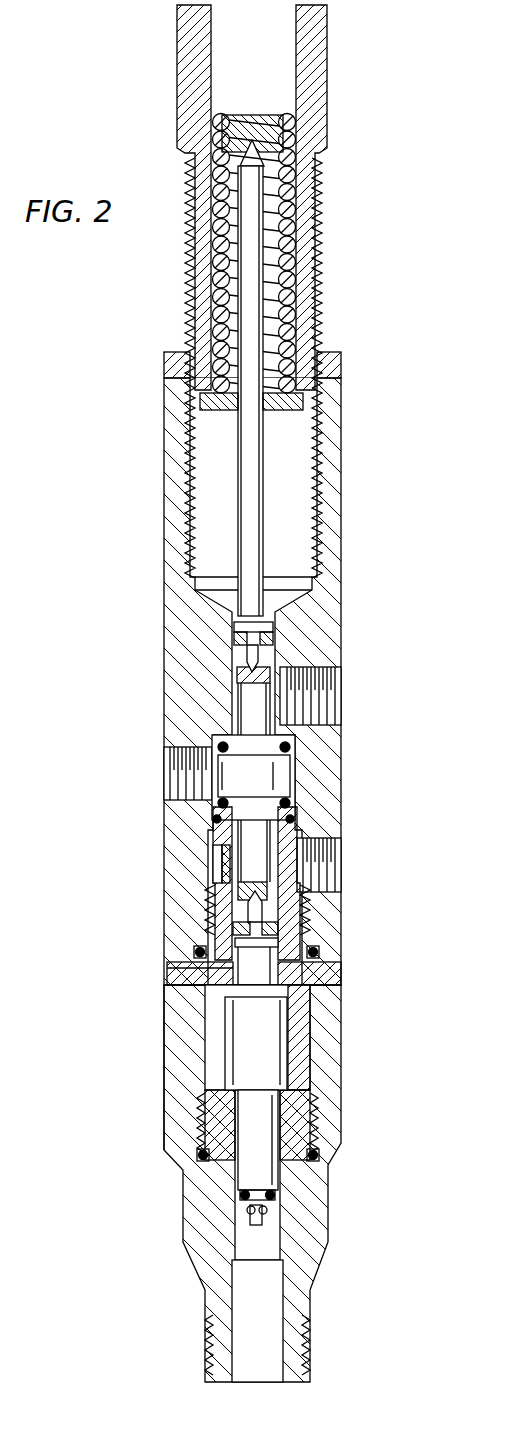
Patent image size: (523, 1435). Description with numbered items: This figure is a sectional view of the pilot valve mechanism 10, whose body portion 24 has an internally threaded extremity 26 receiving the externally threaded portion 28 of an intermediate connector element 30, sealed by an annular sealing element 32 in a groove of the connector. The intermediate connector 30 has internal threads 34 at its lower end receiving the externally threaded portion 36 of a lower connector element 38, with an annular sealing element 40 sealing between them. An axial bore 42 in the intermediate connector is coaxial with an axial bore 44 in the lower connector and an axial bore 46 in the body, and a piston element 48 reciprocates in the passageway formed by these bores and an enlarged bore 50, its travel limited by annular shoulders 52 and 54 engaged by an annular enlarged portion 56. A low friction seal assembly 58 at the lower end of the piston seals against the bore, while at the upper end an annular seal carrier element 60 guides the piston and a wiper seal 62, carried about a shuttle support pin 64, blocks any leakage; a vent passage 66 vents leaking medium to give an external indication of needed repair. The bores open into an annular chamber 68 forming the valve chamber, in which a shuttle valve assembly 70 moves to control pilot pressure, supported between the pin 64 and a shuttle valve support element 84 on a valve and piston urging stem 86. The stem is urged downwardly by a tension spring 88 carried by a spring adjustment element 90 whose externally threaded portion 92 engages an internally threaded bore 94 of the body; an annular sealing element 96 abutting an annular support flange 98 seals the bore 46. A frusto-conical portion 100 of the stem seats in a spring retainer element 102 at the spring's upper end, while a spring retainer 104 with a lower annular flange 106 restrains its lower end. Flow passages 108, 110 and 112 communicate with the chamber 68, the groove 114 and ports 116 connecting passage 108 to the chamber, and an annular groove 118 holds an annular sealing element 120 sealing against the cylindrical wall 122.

The valve assembly 10 is at (160, 1068).
The body portion 24 is at (343, 562).
The internally threaded extremity 26 is at (195, 950).
The externally threaded portion 28 is at (222, 905).
The intermediate connector element 30 is at (180, 1023).
The annular sealing element 32 is at (190, 975).
The internal threads 34 is at (200, 1115).
The externally threaded portion 36 is at (200, 1150).
The lower connector element 38 is at (197, 1250).
The annular sealing element 40 is at (216, 1160).
The axial bore 42 is at (306, 905).
The axial bore 44 is at (276, 1178).
The axial bore 46 is at (275, 665).
The piston element 48 is at (292, 1035).
The enlarged bore 50 is at (305, 1075).
The annular shoulder 52 is at (305, 1005).
The annular shoulder 54 is at (290, 1100).
The annular enlarged portion 56 is at (236, 1075).
The seal assembly 58 is at (245, 1200).
The annular seal carrier element 60 is at (256, 952).
The wiper seal 62 is at (265, 928).
The shuttle support pin 64 is at (280, 945).
The vent passage 66 is at (228, 987).
The annular bore or chamber 68 is at (300, 782).
The shuttle valve assembly 70 is at (297, 790).
The shuttle valve support element 84 is at (250, 655).
The valve and piston urging stem 86 is at (262, 527).
The tension spring 88 is at (315, 225).
The spring adjustment element 90 is at (318, 122).
The externally threaded portion 92 is at (322, 288).
The internally threaded bore 94 is at (303, 463).
The annular sealing element 96 is at (270, 646).
The annular support flange 98 is at (240, 627).
The frusto-conical portion 100 is at (300, 158).
The spring retainer element 102 is at (242, 112).
The spring retainer 104 is at (313, 343).
The lower annular flange 106 is at (318, 400).
The flow passage 108 is at (330, 877).
The flow passage 110 is at (330, 703).
The flow passage 112 is at (185, 775).
The external annular groove 114 is at (213, 862).
The port 116 is at (226, 870).
The annular groove 118 is at (295, 822).
The annular sealing element 120 is at (215, 822).
The cylindrical wall 122 is at (295, 755).